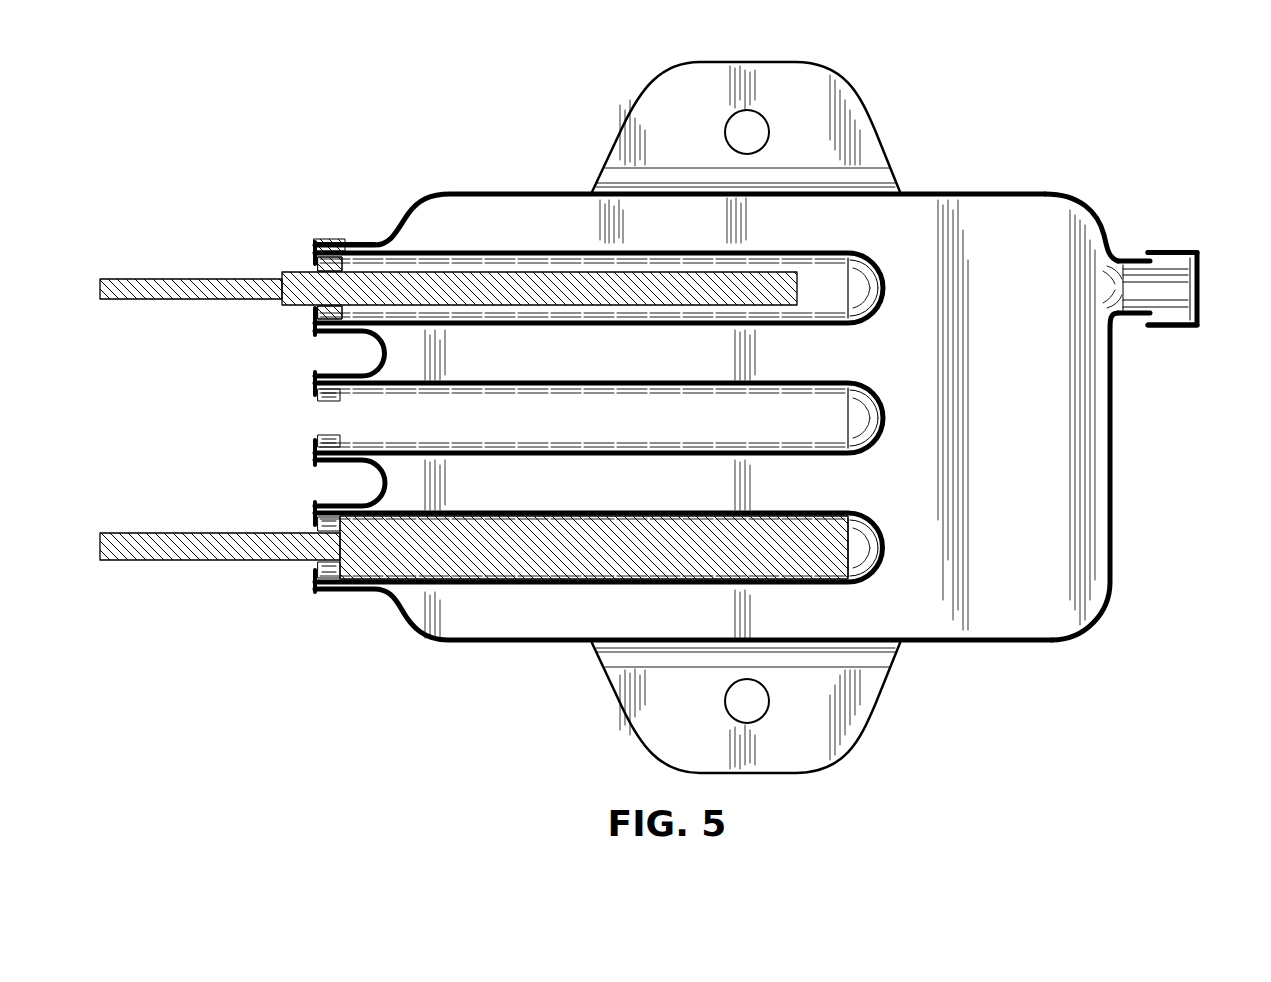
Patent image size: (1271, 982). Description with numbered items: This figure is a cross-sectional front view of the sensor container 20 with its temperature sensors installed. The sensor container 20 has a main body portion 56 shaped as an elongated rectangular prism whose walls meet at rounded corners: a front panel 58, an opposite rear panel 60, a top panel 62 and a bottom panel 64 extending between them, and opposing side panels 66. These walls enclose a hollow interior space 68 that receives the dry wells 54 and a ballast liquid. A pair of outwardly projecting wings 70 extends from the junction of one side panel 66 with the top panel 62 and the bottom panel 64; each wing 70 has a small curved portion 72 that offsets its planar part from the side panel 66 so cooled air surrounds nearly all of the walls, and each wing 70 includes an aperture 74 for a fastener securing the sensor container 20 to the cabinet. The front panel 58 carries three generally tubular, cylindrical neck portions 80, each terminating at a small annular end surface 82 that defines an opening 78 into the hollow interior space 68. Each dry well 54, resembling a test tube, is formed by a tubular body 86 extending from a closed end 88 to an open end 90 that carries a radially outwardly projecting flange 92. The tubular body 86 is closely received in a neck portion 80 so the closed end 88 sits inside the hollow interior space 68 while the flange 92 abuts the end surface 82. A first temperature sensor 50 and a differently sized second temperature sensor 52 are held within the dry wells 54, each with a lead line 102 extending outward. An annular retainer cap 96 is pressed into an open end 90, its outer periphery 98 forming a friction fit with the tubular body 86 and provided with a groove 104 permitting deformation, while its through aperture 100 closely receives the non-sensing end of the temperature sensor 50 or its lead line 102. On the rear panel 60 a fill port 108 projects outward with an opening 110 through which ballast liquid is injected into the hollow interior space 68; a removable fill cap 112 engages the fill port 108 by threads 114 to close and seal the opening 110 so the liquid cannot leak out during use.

The sensor container 20 is at (232, 135).
The first temperature sensor 50 is at (530, 271).
The second temperature sensor 52 is at (528, 514).
The dry well 54 is at (870, 255).
The main body portion 56 is at (740, 411).
The front panel 58 is at (378, 484).
The rear panel 60 is at (1114, 485).
The top panel 62 is at (962, 192).
The bottom panel 64 is at (986, 645).
The side panel 66 is at (1026, 488).
The hollow interior space 68 is at (760, 418).
The wing 70 is at (832, 68).
The curved portion 72 is at (888, 185).
The aperture 74 is at (757, 136).
The opening 78 is at (368, 326).
The neck portion 80 is at (358, 348).
The end surface 82 is at (315, 326).
The tubular body 86 is at (655, 252).
The closed end 88 is at (888, 290).
The open end 90 is at (315, 314).
The flange 92 is at (315, 328).
The retainer cap 96 is at (314, 265).
The outer periphery 98 is at (323, 239).
The through aperture 100 is at (342, 306).
The lead line 102 is at (152, 278).
The groove 104 is at (336, 243).
The fill port 108 is at (1140, 259).
The opening 110 is at (1199, 290).
The fill cap 112 is at (1170, 262).
The threads 114 is at (1162, 327).